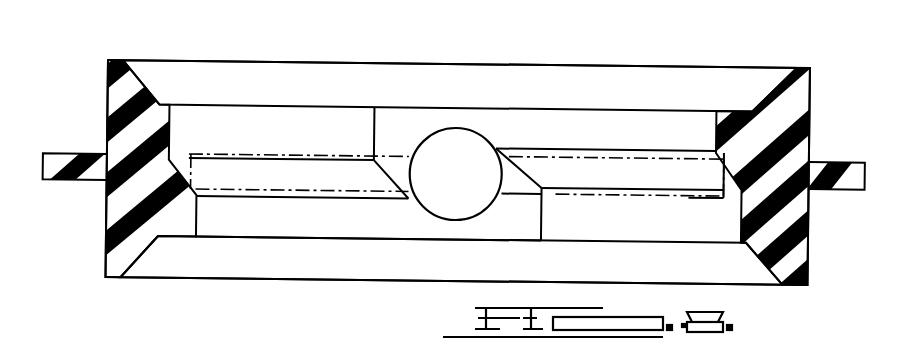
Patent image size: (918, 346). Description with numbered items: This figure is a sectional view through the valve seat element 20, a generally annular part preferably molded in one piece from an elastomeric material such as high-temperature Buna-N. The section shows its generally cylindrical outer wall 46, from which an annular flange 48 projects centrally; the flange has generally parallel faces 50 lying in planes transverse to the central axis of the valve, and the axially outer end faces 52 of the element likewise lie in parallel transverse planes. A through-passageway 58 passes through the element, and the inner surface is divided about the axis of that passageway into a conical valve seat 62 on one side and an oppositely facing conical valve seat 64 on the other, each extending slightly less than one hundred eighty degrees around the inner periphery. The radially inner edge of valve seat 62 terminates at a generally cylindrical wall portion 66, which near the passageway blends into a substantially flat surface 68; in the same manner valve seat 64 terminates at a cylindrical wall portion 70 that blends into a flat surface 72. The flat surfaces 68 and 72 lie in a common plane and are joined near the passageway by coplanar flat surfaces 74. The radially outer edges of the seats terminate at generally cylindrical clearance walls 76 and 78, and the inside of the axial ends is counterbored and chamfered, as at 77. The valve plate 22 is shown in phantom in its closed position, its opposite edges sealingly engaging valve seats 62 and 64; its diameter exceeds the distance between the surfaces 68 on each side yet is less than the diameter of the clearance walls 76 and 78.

The valve seat element 20 is at (104, 107).
The valve plate 22 is at (313, 150).
The outer wall 46 is at (107, 240).
The annular flange 48 is at (65, 170).
The faces 50 is at (822, 165).
The axially outer end faces 52 is at (715, 66).
The through-passageway 58 is at (424, 146).
The conical valve seat 62 is at (300, 205).
The conical valve seat 64 is at (615, 150).
The cylindrical wall portion 66 is at (286, 228).
The flat surface 68 is at (503, 230).
The cylindrical wall portion 70 is at (641, 118).
The flat surface 72 is at (403, 122).
The flat surfaces 74 is at (405, 176).
The clearance wall 76 is at (253, 124).
The counterbore and chamfer 77 is at (205, 72).
The clearance wall 78 is at (648, 228).